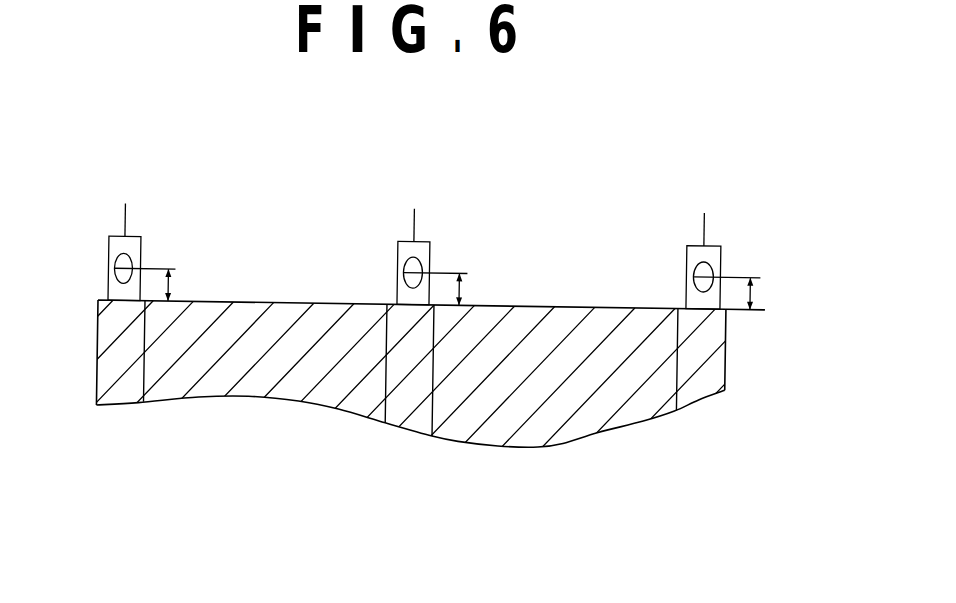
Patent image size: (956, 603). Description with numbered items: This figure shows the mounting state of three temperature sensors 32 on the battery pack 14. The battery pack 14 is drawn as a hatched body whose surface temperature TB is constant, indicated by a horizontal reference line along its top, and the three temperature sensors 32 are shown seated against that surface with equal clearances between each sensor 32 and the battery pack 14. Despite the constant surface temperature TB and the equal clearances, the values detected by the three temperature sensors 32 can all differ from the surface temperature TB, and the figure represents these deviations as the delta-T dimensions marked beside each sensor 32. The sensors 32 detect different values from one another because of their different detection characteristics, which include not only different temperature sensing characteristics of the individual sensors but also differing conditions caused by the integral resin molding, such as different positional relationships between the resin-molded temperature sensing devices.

The temperature sensor 32 is at (114, 267).
The battery pack 14 is at (641, 393).
The surface temperature TB is at (578, 300).